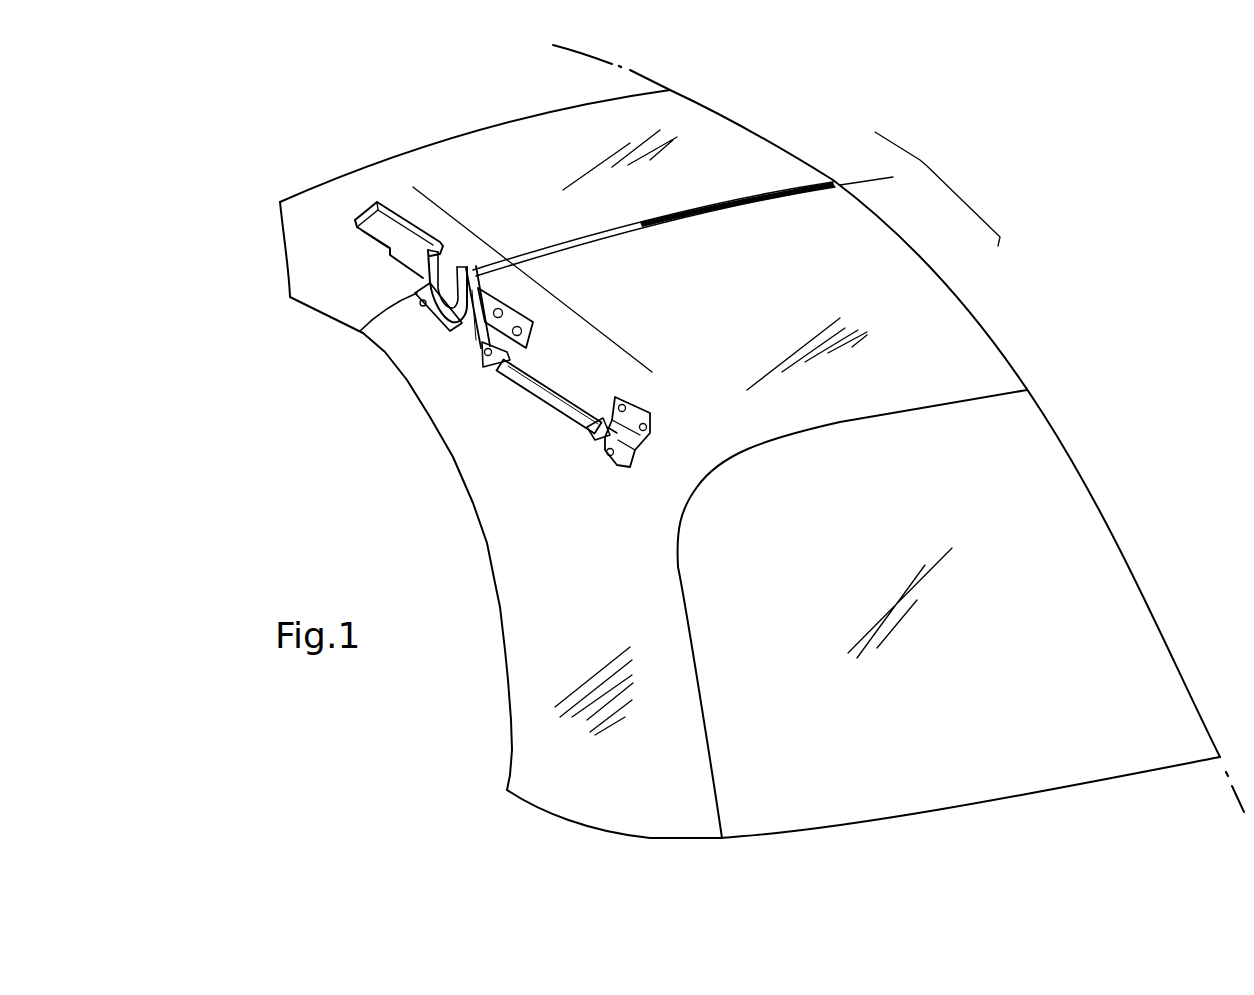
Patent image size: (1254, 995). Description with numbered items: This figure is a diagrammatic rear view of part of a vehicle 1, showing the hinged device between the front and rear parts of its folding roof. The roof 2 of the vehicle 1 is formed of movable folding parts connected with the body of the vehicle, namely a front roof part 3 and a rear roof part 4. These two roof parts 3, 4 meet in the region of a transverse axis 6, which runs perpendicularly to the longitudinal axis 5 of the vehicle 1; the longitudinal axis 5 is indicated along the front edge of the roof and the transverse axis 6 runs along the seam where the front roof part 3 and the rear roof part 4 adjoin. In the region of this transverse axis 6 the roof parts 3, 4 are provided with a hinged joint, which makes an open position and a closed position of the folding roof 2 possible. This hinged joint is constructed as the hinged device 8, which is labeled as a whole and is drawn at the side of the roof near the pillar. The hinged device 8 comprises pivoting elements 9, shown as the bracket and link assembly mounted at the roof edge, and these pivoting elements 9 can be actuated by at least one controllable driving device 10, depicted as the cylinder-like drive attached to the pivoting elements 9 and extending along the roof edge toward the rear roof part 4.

The vehicle 1 is at (1087, 211).
The roof 2 is at (920, 189).
The front roof part 3 is at (531, 153).
The rear roof part 4 is at (958, 342).
The longitudinal axis 5 is at (576, 53).
The transverse axis 6 is at (753, 205).
The hinged device 8 is at (543, 276).
The pivoting elements 9 is at (420, 323).
The controllable driving device 10 is at (546, 421).